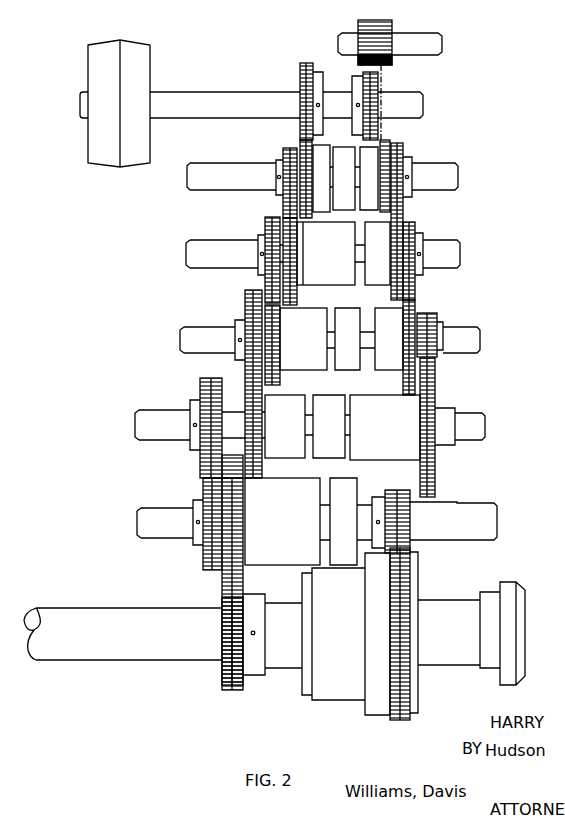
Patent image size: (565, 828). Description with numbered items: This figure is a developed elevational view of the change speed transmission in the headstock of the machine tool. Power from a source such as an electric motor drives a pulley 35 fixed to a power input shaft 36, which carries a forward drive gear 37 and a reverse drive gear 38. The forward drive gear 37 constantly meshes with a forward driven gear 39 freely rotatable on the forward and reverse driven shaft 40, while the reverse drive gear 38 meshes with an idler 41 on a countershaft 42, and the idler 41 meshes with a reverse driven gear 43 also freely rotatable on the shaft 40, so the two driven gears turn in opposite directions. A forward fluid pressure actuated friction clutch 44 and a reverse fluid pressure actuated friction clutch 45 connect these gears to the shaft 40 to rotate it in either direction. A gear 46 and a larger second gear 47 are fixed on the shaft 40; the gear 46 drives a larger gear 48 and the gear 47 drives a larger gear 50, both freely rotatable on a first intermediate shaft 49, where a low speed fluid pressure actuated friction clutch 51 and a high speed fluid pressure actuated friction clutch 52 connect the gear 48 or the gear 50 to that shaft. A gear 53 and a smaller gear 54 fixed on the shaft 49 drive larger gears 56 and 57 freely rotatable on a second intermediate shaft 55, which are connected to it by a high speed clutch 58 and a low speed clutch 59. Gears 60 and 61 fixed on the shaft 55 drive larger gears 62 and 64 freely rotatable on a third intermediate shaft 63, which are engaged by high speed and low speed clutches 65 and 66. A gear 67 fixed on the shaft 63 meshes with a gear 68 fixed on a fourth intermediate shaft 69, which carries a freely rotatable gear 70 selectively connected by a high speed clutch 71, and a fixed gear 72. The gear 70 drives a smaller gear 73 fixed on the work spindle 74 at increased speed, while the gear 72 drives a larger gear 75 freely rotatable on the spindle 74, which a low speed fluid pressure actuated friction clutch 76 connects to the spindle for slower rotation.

The pulley 35 is at (152, 60).
The power input shaft 36 is at (215, 97).
The forward drive gear 37 is at (308, 62).
The reverse drive gear 38 is at (374, 87).
The forward driven gear 39 is at (300, 148).
The forward and reverse driven shaft 40 is at (445, 176).
The idler 41 is at (392, 26).
The countershaft 42 is at (430, 42).
The reverse driven gear 43 is at (386, 142).
The forward fluid pressure actuated friction clutch 44 is at (322, 152).
The reverse fluid pressure actuated friction clutch 45 is at (357, 184).
The gear 46 is at (285, 210).
The second gear 47 is at (405, 224).
The gear 48 is at (296, 300).
The first intermediate shaft 49 is at (445, 254).
The gear 50 is at (418, 232).
The low speed fluid pressure actuated friction clutch 51 is at (310, 264).
The high speed fluid pressure actuated friction clutch 52 is at (382, 282).
The gear 53 is at (262, 234).
The gear 54 is at (422, 287).
The second intermediate shaft 55 is at (468, 340).
The gear 56 is at (282, 332).
The gear 57 is at (416, 305).
The high speed fluid pressure actuated friction clutch 58 is at (322, 362).
The low speed fluid pressure actuated friction clutch 59 is at (392, 360).
The gear 60 is at (245, 300).
The gear 61 is at (440, 320).
The gear 62 is at (262, 472).
The third intermediate shaft 63 is at (468, 425).
The gear 64 is at (437, 392).
The high speed fluid pressure actuated friction clutch 65 is at (285, 432).
The low speed fluid pressure actuated friction clutch 66 is at (400, 446).
The gear 67 is at (198, 394).
The gear 68 is at (205, 560).
The fourth intermediate shaft 69 is at (488, 516).
The gear 70 is at (222, 583).
The high speed fluid pressure actuated friction clutch 71 is at (286, 562).
The gear 72 is at (412, 542).
The gear 73 is at (228, 686).
The work spindle 74 is at (130, 650).
The gear 75 is at (416, 594).
The low speed fluid pressure actuated friction clutch 76 is at (337, 690).